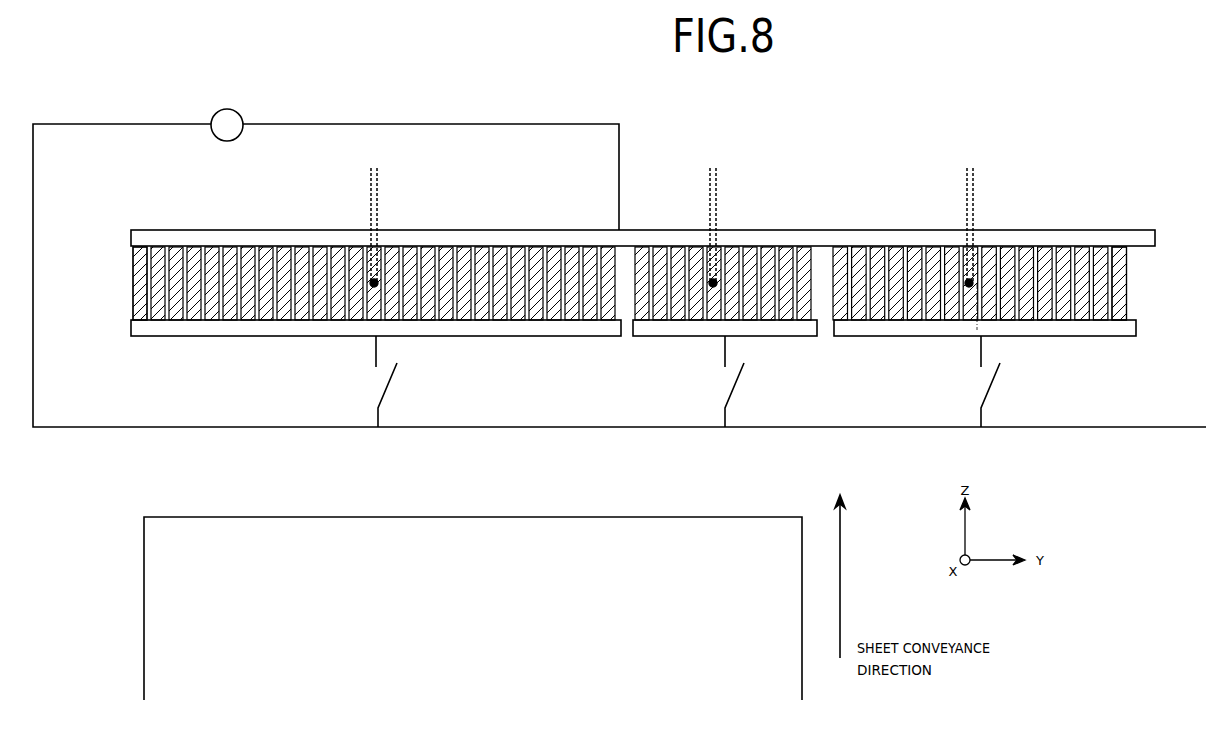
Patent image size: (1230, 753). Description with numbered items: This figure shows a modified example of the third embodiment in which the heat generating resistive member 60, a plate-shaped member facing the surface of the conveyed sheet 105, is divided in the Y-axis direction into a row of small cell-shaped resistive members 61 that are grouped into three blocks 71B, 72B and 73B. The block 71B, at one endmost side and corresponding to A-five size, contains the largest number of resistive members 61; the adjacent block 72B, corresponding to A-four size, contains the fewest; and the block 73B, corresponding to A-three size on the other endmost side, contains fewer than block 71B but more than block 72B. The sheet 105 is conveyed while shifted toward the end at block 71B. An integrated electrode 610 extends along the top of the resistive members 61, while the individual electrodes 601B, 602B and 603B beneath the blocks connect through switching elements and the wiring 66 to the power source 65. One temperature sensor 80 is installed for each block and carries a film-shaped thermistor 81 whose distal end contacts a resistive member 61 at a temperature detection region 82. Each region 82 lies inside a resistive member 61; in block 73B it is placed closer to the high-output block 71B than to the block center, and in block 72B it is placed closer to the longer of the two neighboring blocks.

The heat generating resistive member 60 is at (132, 273).
The resistive member 61 is at (152, 248).
The power source 65 is at (236, 112).
The wiring 66 is at (82, 124).
The block 71B is at (280, 226).
The block 72B is at (773, 226).
The block 73B is at (1041, 226).
The temperature sensor 80 is at (373, 166).
The thermistor 81 is at (380, 188).
The temperature detection region 82 is at (378, 280).
The sheet 105 is at (152, 575).
The first roller unit 601B is at (268, 327).
The second roller unit 602B is at (679, 333).
The third roller unit 603B is at (880, 333).
The integrated electrode 610 is at (565, 238).